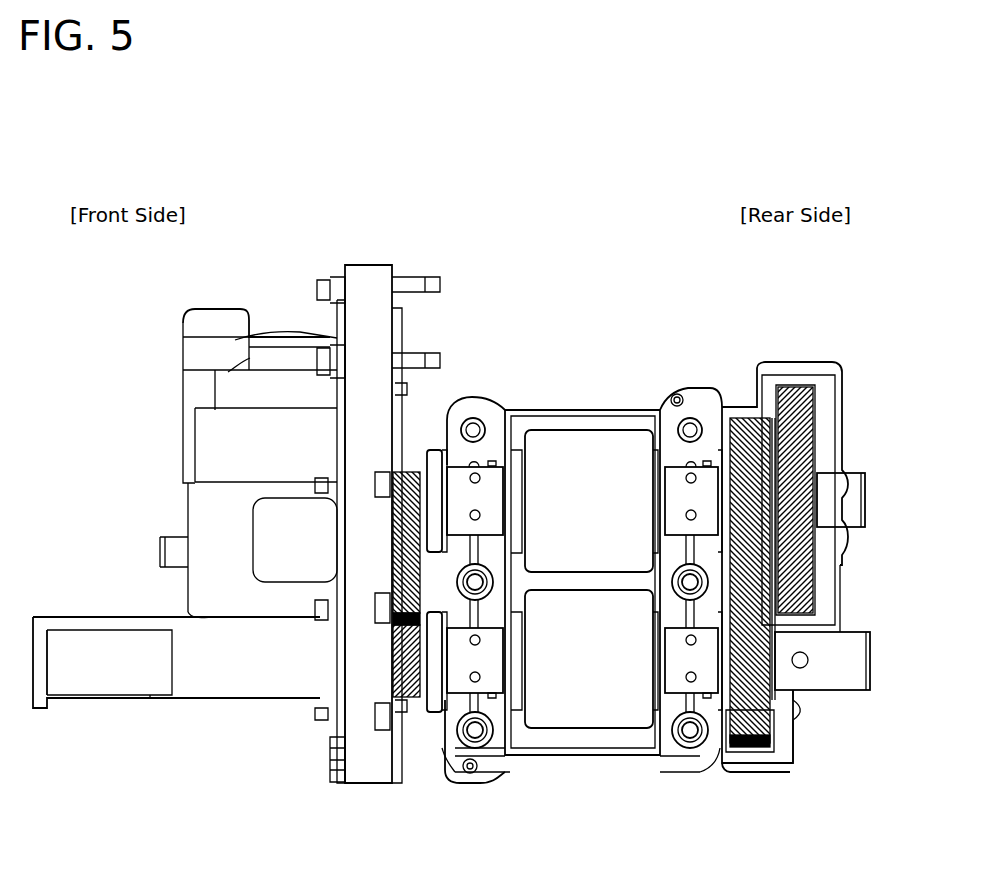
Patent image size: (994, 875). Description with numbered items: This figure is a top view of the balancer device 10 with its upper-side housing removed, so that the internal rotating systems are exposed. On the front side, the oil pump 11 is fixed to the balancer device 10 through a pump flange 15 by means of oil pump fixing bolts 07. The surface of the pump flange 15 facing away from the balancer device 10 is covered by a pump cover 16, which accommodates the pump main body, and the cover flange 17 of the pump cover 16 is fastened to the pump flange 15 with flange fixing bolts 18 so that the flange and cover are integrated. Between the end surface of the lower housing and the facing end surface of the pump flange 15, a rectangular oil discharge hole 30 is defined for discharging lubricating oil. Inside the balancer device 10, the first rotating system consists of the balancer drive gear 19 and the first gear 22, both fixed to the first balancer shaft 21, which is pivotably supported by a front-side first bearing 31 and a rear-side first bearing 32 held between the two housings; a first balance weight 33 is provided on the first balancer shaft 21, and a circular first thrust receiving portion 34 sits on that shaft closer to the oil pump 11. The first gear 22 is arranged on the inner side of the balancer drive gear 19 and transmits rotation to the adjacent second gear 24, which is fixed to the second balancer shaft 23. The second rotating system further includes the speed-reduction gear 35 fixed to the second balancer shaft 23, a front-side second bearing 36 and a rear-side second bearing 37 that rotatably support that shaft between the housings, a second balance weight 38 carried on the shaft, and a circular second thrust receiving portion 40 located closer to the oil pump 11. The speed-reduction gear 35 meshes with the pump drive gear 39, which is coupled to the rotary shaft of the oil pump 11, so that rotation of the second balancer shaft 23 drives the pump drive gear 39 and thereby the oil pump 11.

The oil pump fixing bolts 07 is at (335, 278).
The balancer device 10 is at (533, 362).
The oil pump 11 is at (160, 464).
The pump flange 15 is at (372, 282).
The pump cover 16 is at (188, 597).
The cover flange 17 is at (345, 528).
The flange fixing bolts 18 is at (378, 482).
The balancer drive gear 19 is at (810, 420).
The first balancer shaft 21 is at (865, 507).
The first gear 22 is at (750, 420).
The second balancer shaft 23 is at (860, 665).
The second gear 24 is at (750, 720).
The oil discharge hole 30 is at (398, 448).
The front-side first bearing 31 is at (485, 470).
The rear-side first bearing 32 is at (680, 478).
The first balance weight 33 is at (585, 478).
The first thrust receiving portion 34 is at (433, 448).
The speed-reduction gear 35 is at (415, 698).
The front-side second bearing 36 is at (505, 690).
The rear-side second bearing 37 is at (675, 690).
The second balance weight 38 is at (595, 715).
The pump drive gear 39 is at (405, 578).
The second thrust receiving portion 40 is at (433, 698).